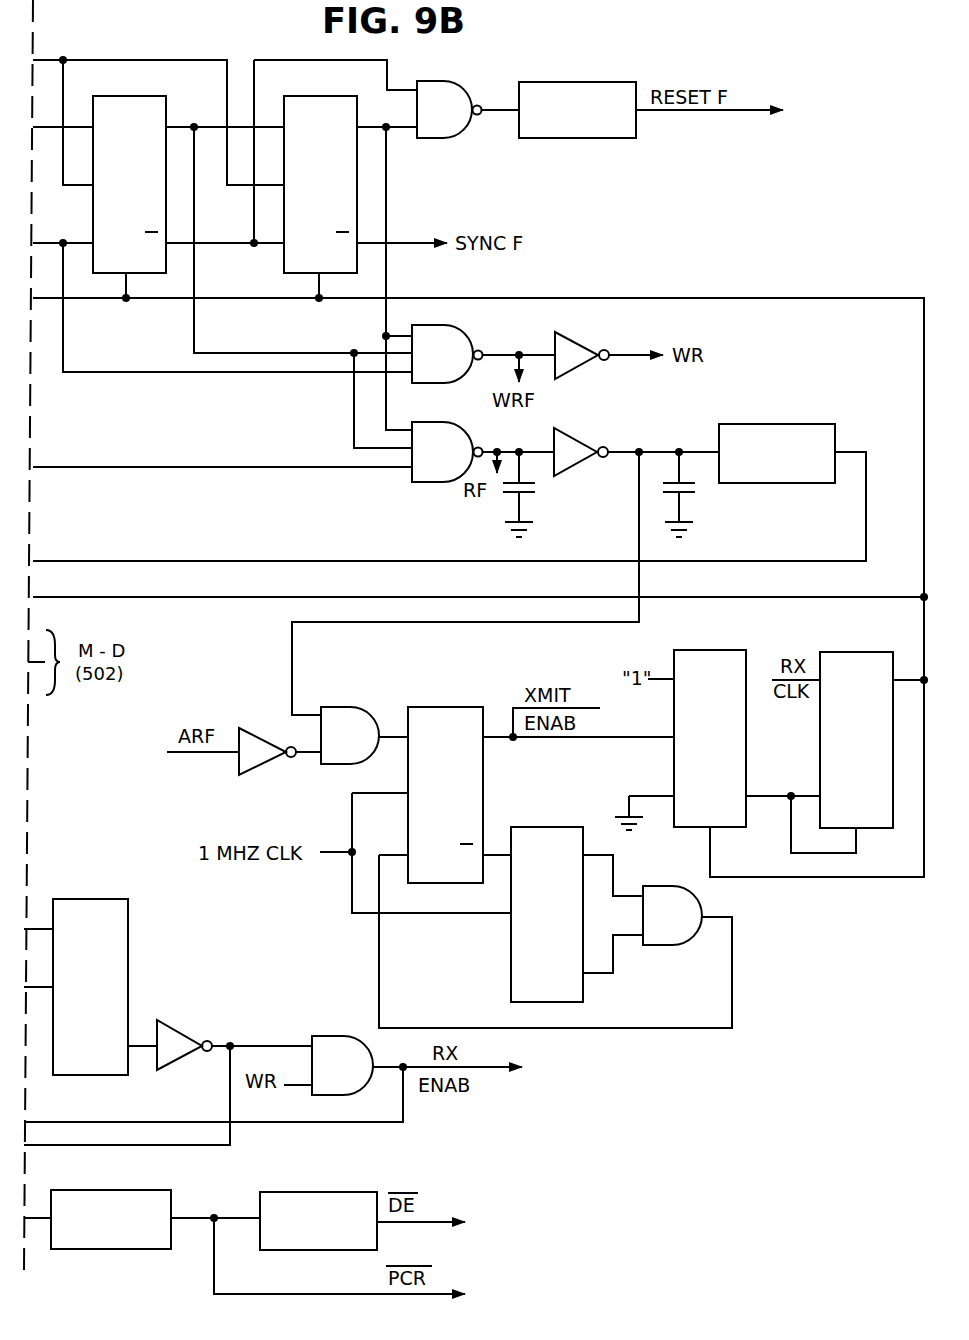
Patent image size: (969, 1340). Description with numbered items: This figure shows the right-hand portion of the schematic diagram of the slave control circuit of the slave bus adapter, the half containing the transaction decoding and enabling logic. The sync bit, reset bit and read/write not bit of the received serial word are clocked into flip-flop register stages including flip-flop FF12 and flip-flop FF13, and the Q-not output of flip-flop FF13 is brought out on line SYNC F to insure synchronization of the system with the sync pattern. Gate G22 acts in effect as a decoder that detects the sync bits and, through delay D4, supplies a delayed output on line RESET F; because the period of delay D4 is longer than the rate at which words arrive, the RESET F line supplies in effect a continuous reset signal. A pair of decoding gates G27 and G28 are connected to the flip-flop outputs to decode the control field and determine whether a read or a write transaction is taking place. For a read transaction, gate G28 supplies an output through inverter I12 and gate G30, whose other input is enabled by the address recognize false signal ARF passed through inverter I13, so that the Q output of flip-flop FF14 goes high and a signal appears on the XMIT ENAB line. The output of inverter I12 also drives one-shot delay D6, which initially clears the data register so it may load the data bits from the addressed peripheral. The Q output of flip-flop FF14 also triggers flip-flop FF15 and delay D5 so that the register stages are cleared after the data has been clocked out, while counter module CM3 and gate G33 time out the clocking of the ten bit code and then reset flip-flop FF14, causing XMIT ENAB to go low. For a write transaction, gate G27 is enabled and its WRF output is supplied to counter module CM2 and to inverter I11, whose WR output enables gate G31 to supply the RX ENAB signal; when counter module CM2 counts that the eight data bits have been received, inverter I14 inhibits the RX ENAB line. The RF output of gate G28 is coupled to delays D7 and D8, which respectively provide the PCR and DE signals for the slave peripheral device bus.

The flip-flop register stage FF12 is at (129, 184).
The flip-flop register stage FF13 is at (320, 184).
The flip-flop FF14 is at (445, 795).
The flip-flop FF15 is at (710, 738).
The gate G22 is at (449, 109).
The decoding gate G27 is at (447, 354).
The decoding gate G28 is at (447, 452).
The gate G30 is at (350, 735).
The gate G31 is at (342, 1065).
The gate G33 is at (672, 915).
The inverter I11 is at (573, 350).
The inverter I12 is at (572, 447).
The inverter I13 is at (262, 747).
The inverter I14 is at (170, 1032).
The delay D4 is at (588, 138).
The delay D5 is at (836, 660).
The one-shot delay D6 is at (752, 428).
The delay D7 is at (88, 1196).
The delay D8 is at (288, 1197).
The counter module CM2 is at (118, 943).
The counter module CM3 is at (511, 969).